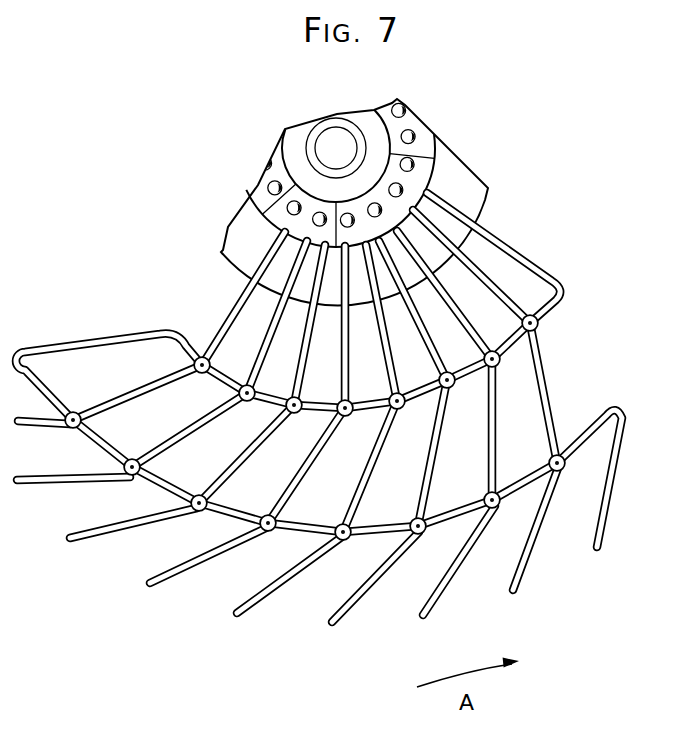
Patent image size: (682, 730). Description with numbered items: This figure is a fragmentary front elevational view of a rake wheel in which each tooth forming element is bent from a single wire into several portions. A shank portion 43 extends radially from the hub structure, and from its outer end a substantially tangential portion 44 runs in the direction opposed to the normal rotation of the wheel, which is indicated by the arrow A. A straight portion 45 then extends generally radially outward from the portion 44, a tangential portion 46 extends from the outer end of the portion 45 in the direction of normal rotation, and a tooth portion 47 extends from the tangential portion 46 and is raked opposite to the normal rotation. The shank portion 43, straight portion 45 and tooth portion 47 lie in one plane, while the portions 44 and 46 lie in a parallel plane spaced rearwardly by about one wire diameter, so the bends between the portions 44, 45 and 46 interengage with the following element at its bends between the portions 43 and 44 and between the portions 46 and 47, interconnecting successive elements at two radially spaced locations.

The shank portion 43 is at (233, 320).
The substantially tangential portion 44 is at (170, 338).
The straight portion 45 is at (53, 347).
The tangential portion 46 is at (45, 388).
The tooth portion 47 is at (33, 427).